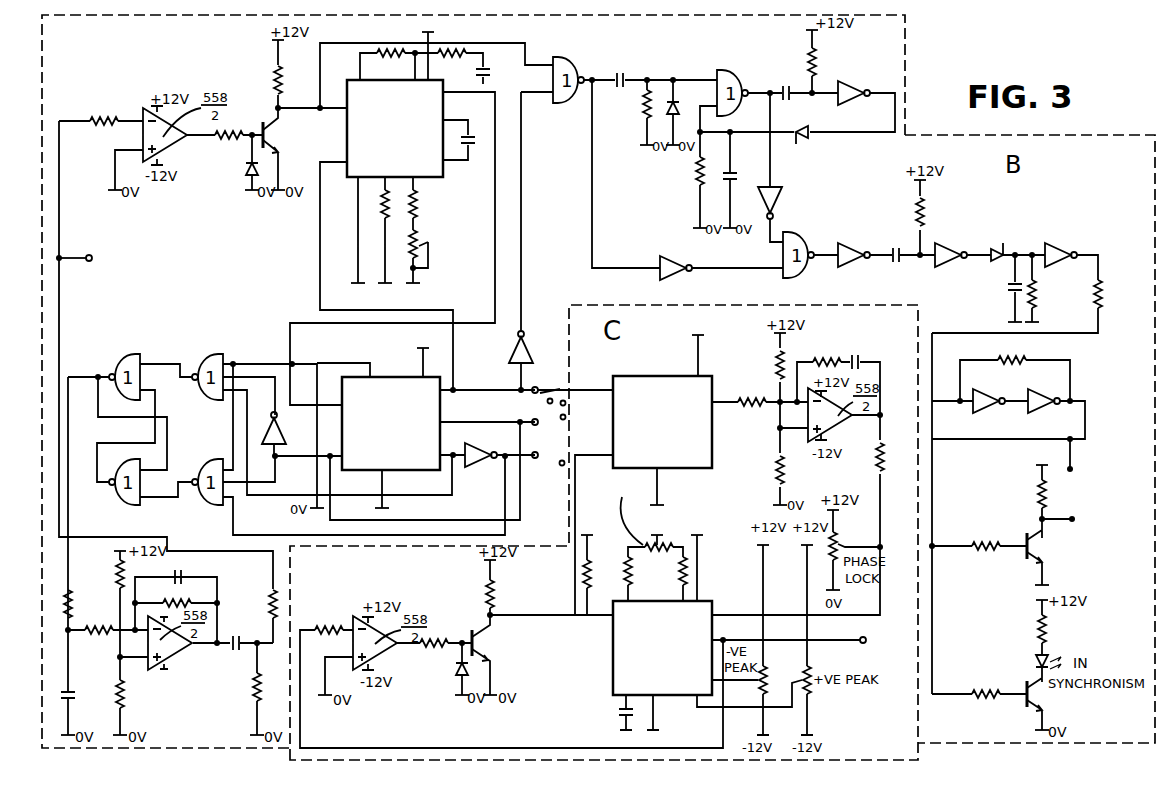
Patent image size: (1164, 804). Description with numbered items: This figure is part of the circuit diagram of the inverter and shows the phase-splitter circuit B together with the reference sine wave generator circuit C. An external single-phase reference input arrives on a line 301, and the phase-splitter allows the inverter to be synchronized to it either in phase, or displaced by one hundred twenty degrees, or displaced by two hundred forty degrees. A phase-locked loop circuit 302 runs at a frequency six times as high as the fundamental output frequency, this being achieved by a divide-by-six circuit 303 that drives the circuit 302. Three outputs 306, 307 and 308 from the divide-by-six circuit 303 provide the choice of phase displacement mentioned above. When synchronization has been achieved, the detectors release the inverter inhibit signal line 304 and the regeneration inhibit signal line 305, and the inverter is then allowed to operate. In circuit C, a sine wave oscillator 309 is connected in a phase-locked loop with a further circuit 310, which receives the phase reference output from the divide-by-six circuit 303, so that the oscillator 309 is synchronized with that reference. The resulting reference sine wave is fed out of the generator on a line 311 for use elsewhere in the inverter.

The single-phase reference input line 301 is at (73, 260).
The phase-locked loop circuit 302 is at (405, 178).
The divide-by-six circuit 303 is at (386, 376).
The inverter inhibit signal line 304 is at (1073, 447).
The regeneration inhibit signal line 305 is at (1055, 528).
The first output 306 is at (478, 389).
The second output 307 is at (452, 421).
The third output 308 is at (517, 458).
The sine wave oscillator 309 is at (613, 665).
The phase-locked loop circuit 310 is at (652, 372).
The reference sine wave output line 311 is at (782, 638).